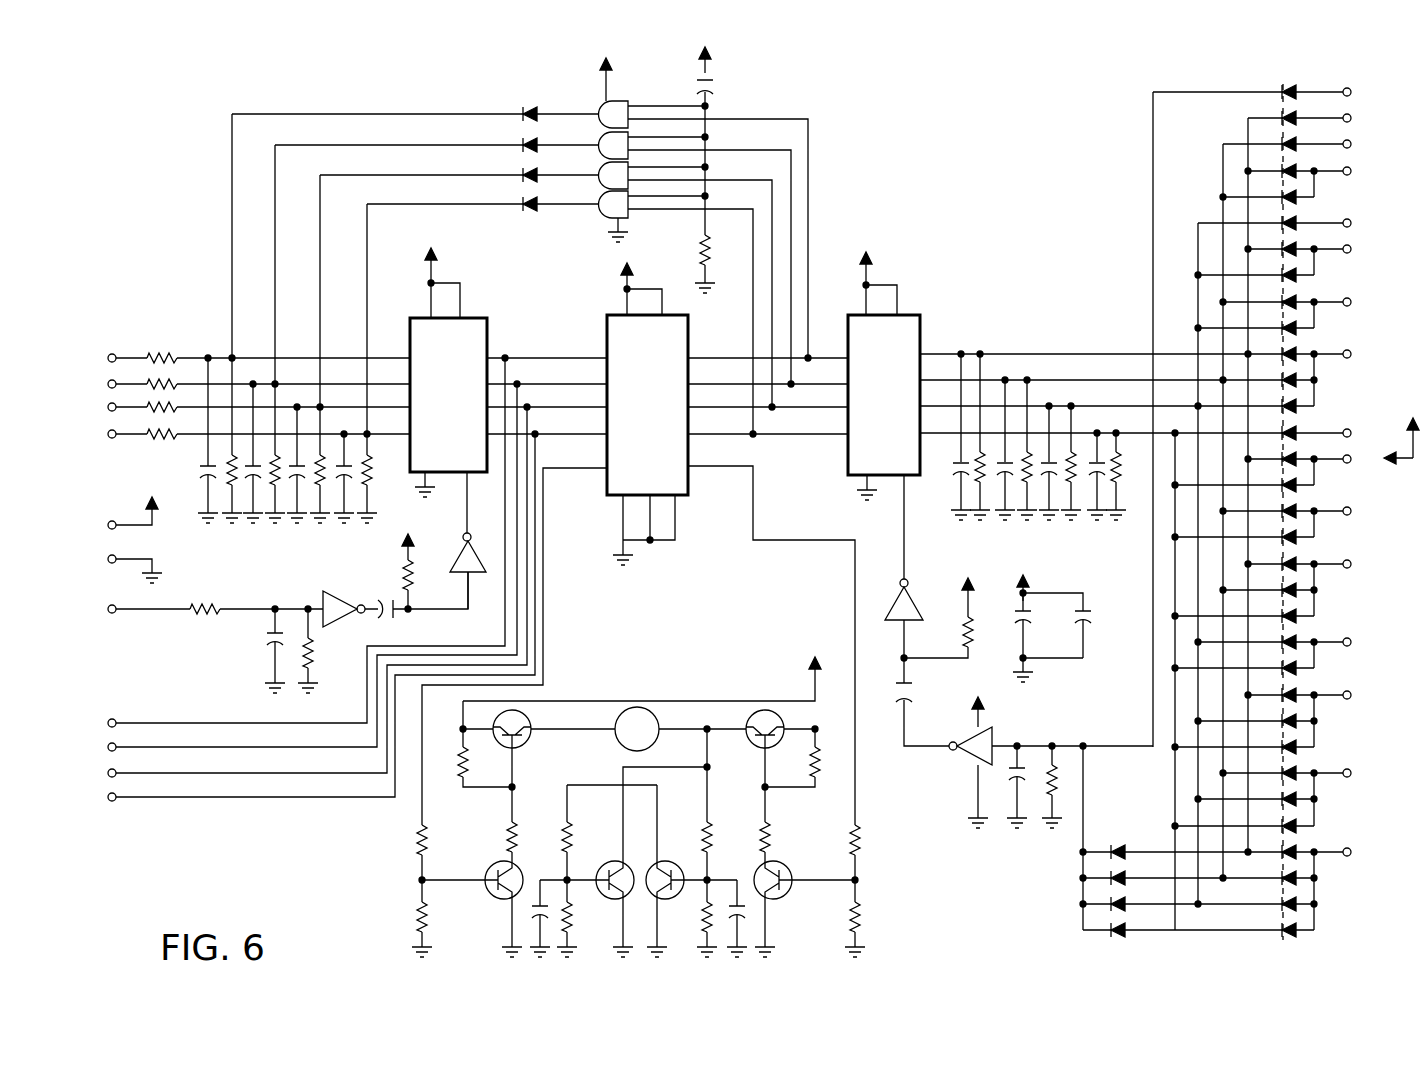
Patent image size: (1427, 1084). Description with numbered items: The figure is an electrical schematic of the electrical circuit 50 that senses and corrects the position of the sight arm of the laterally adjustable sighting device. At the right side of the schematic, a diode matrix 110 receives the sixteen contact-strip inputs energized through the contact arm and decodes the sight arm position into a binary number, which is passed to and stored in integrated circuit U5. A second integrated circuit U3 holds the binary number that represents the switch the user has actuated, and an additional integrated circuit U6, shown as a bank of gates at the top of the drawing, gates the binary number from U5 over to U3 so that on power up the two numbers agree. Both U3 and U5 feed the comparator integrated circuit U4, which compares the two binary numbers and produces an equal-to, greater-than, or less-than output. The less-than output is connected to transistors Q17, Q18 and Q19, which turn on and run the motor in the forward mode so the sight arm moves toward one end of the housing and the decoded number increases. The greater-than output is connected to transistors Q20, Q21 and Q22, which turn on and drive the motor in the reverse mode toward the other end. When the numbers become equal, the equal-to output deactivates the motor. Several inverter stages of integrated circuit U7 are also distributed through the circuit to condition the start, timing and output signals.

The electrical circuit 50 is at (671, 509).
The diode matrix 110 is at (1271, 84).
The integrated circuit U3 is at (448, 395).
The comparator IC U4 is at (648, 405).
The integrated circuit U5 is at (884, 395).
The integrated circuit U6 is at (600, 159).
The inverter IC U7 is at (344, 609).
The transistor Q17 is at (492, 873).
The transistor Q18 is at (524, 744).
The transistor Q19 is at (609, 873).
The transistor Q20 is at (670, 873).
The transistor Q21 is at (755, 744).
The transistor Q22 is at (782, 874).